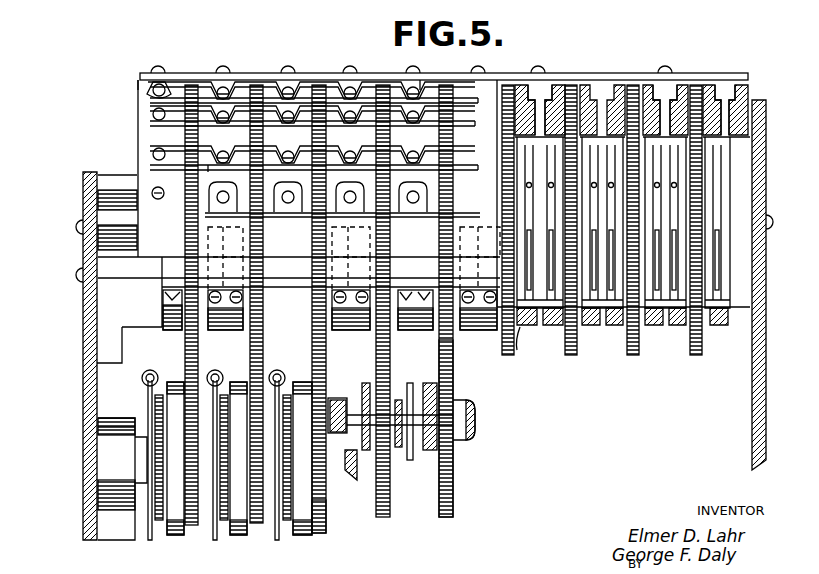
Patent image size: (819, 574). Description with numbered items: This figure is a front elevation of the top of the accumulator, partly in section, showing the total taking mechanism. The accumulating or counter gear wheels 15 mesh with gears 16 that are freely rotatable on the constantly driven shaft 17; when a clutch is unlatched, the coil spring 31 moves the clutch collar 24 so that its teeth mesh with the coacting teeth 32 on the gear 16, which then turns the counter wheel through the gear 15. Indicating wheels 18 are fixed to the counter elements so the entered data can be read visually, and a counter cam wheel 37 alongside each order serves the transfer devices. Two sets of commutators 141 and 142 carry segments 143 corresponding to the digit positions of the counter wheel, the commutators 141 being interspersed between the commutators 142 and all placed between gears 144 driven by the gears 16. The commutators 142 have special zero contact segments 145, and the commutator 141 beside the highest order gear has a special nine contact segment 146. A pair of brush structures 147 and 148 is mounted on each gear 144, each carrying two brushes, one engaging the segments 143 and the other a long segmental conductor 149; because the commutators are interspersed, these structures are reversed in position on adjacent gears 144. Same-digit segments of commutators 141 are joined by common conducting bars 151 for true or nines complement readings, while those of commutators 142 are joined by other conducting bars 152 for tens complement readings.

The commutator 141 is at (143, 88).
The commutator 142 is at (490, 90).
The segment 143 is at (678, 83).
The gear 144 is at (185, 178).
The zero contact segment 145 is at (238, 243).
The nine contact segment 146 is at (158, 193).
The brush structure 147 is at (549, 327).
The brush structure 148 is at (717, 172).
The segmental conductor 149 is at (522, 352).
The conducting bar 151 is at (152, 143).
The conducting bar 152 is at (478, 163).
The counter gear wheel 15 is at (317, 522).
The gear 16 is at (455, 503).
The shaft 17 is at (462, 437).
The indicating wheel 18 is at (298, 535).
The clutch collar 24 is at (423, 452).
The coil spring 31 is at (397, 398).
The teeth 32 is at (435, 458).
The counter cam wheel 37 is at (223, 540).